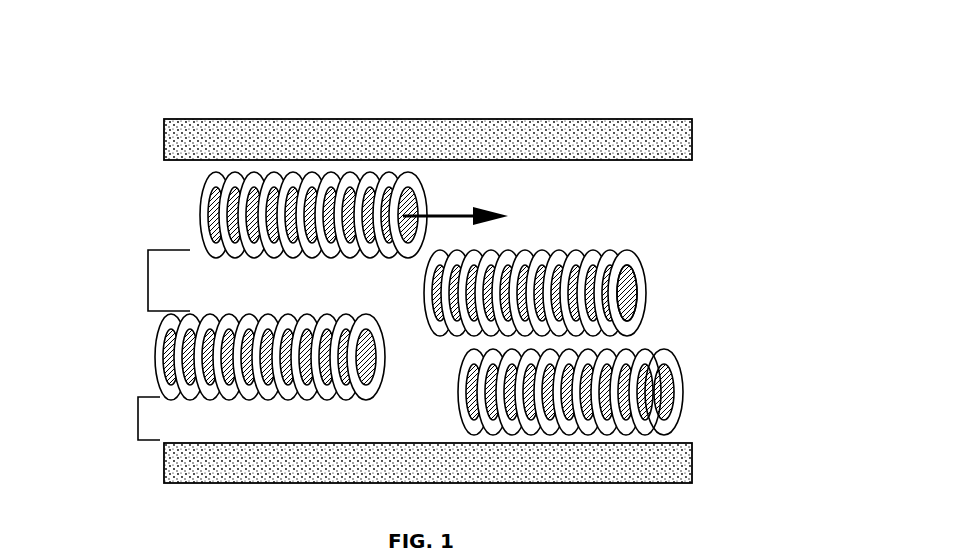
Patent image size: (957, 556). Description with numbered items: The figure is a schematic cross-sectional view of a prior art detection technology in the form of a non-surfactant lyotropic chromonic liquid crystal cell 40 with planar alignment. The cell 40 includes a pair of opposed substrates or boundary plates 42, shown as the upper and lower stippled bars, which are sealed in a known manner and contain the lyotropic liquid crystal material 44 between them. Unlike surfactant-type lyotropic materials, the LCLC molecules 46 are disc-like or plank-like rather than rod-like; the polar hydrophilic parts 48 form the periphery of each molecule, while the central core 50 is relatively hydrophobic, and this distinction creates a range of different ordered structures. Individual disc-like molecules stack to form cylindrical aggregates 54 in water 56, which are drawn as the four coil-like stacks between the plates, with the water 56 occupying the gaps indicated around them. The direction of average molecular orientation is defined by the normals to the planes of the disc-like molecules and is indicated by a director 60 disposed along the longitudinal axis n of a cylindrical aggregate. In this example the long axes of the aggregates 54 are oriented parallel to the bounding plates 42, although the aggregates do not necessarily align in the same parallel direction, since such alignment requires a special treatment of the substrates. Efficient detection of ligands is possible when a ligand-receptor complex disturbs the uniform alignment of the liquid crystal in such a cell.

The non-surfactant lyotropic chromonic liquid crystal cell 40 is at (122, 120).
The boundary plates 42 is at (692, 144).
The lyotropic liquid crystal material 44 is at (646, 325).
The LCLC molecules 46 is at (655, 320).
The polar hydrophilic parts 48 is at (632, 254).
The central core 50 is at (645, 283).
The cylindrical aggregates 54 is at (305, 286).
The water 56 is at (147, 277).
The director 60 is at (444, 213).